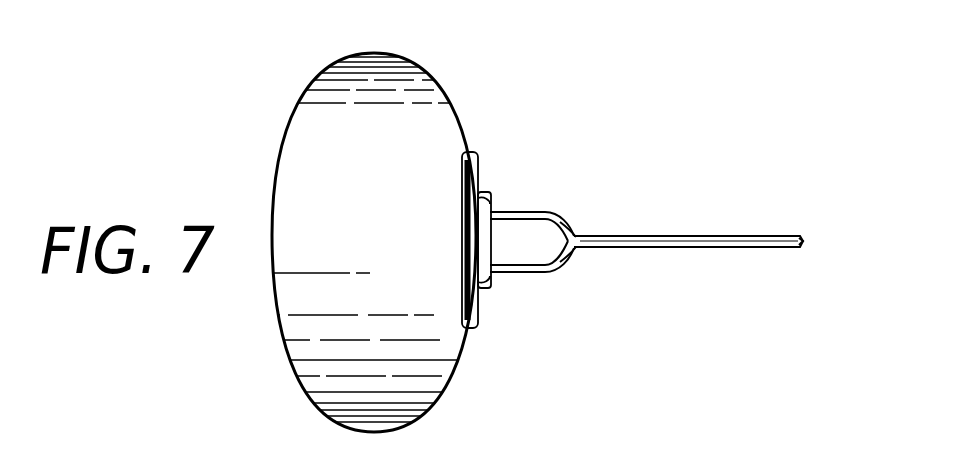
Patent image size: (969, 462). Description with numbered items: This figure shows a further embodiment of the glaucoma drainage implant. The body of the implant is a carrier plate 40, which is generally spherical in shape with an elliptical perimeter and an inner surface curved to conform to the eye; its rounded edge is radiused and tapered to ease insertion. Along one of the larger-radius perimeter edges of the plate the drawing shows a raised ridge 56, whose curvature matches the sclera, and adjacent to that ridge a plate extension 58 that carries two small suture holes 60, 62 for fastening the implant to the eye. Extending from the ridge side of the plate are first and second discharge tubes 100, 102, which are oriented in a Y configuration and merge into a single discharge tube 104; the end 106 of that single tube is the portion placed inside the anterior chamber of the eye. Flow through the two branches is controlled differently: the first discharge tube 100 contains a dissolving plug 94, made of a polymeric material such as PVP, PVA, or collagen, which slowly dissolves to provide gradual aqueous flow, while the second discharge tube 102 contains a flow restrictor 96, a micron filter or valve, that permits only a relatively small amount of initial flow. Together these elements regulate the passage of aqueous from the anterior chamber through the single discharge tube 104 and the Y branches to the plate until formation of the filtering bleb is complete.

The carrier plate 40 is at (450, 118).
The raised ridge 56 is at (473, 156).
The plate extension 58 is at (490, 198).
The suture hole 60 is at (478, 187).
The suture hole 62 is at (477, 258).
The dissolving plug 94 is at (505, 212).
The flow restrictor 96 is at (517, 273).
The first discharge tube 100 is at (582, 228).
The second discharge tube 102 is at (557, 266).
The single discharge tube 104 is at (727, 237).
The end of discharge tube 106 is at (803, 242).